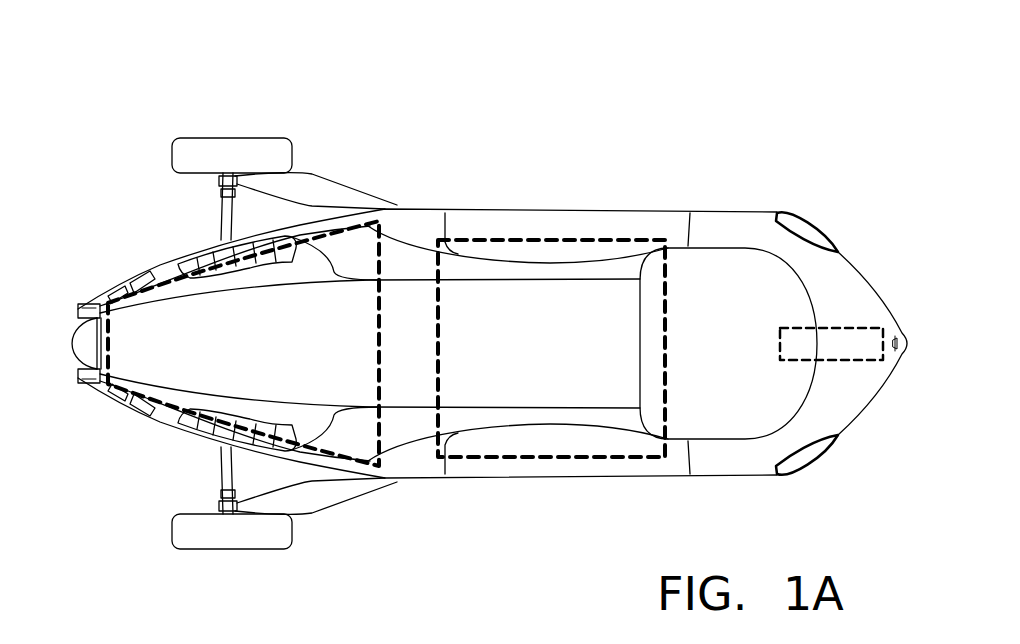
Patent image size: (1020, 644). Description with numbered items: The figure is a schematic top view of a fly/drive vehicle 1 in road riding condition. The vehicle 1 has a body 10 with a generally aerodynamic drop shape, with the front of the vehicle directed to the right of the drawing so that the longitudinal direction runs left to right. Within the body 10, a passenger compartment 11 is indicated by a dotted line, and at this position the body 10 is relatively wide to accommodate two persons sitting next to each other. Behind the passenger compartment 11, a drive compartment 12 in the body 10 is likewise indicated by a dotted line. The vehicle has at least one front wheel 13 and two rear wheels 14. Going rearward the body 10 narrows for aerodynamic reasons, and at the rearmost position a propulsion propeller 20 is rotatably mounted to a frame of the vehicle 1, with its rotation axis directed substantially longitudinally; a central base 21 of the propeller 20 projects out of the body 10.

The fly/drive vehicle 1 is at (812, 52).
The body 10 is at (581, 211).
The passenger compartment 11 is at (680, 289).
The drive compartment 12 is at (392, 301).
The front wheel 13 is at (856, 328).
The rear wheels 14 is at (240, 138).
The propulsion propeller 20 is at (68, 408).
The central base 21 is at (66, 331).